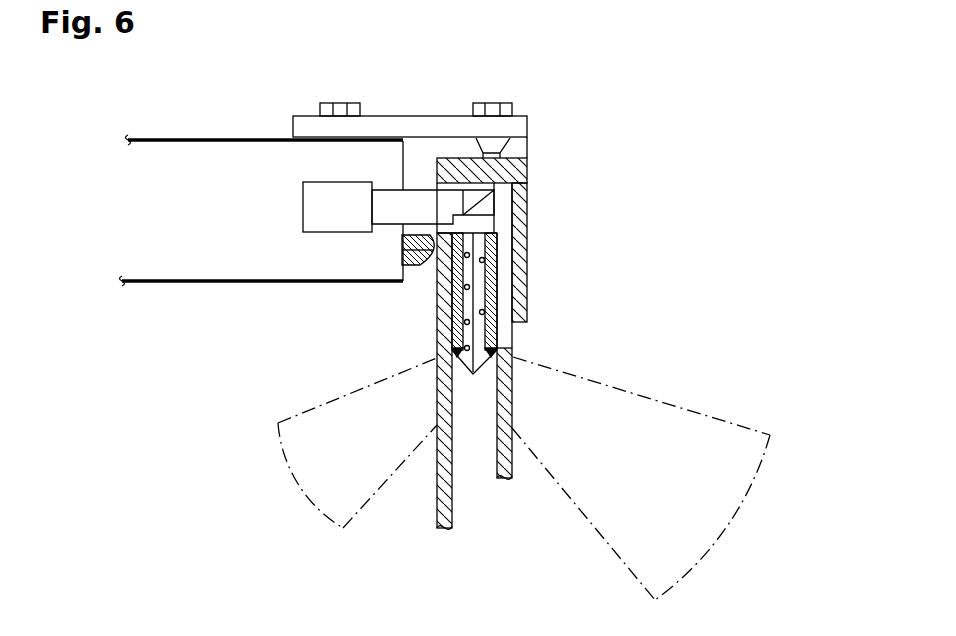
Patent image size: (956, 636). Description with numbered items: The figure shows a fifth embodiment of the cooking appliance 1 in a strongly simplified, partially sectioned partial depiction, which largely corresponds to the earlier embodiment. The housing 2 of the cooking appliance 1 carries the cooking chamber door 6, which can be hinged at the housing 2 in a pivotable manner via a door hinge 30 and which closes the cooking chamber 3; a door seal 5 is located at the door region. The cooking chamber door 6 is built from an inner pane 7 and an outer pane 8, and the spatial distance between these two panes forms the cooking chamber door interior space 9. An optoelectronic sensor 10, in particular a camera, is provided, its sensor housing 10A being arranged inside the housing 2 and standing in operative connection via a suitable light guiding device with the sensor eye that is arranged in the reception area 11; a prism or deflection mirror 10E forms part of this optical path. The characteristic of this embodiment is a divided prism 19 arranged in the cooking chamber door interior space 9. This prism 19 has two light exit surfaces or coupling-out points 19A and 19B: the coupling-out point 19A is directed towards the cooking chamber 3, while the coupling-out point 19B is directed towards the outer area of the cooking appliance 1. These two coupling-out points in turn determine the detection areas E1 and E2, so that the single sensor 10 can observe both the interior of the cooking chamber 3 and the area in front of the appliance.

The cooking appliance 1 is at (528, 199).
The housing 2 is at (147, 128).
The cooking chamber 3 is at (184, 476).
The door seal 5 is at (412, 265).
The cooking chamber door 6 is at (546, 338).
The inner pane 7 is at (446, 532).
The outer pane 8 is at (505, 480).
The cooking chamber door interior space 9 is at (485, 466).
The optoelectronic sensor 10 is at (262, 207).
The sensor housing 10A is at (331, 182).
The prism/deflection mirror 10E is at (514, 228).
The reception area 11 is at (497, 202).
The divided prism 19 is at (488, 298).
The coupling-out point 19A is at (462, 358).
The coupling-out point 19B is at (488, 352).
The door hinge 30 is at (437, 108).
The detection area E1 is at (312, 498).
The detection area E2 is at (748, 492).